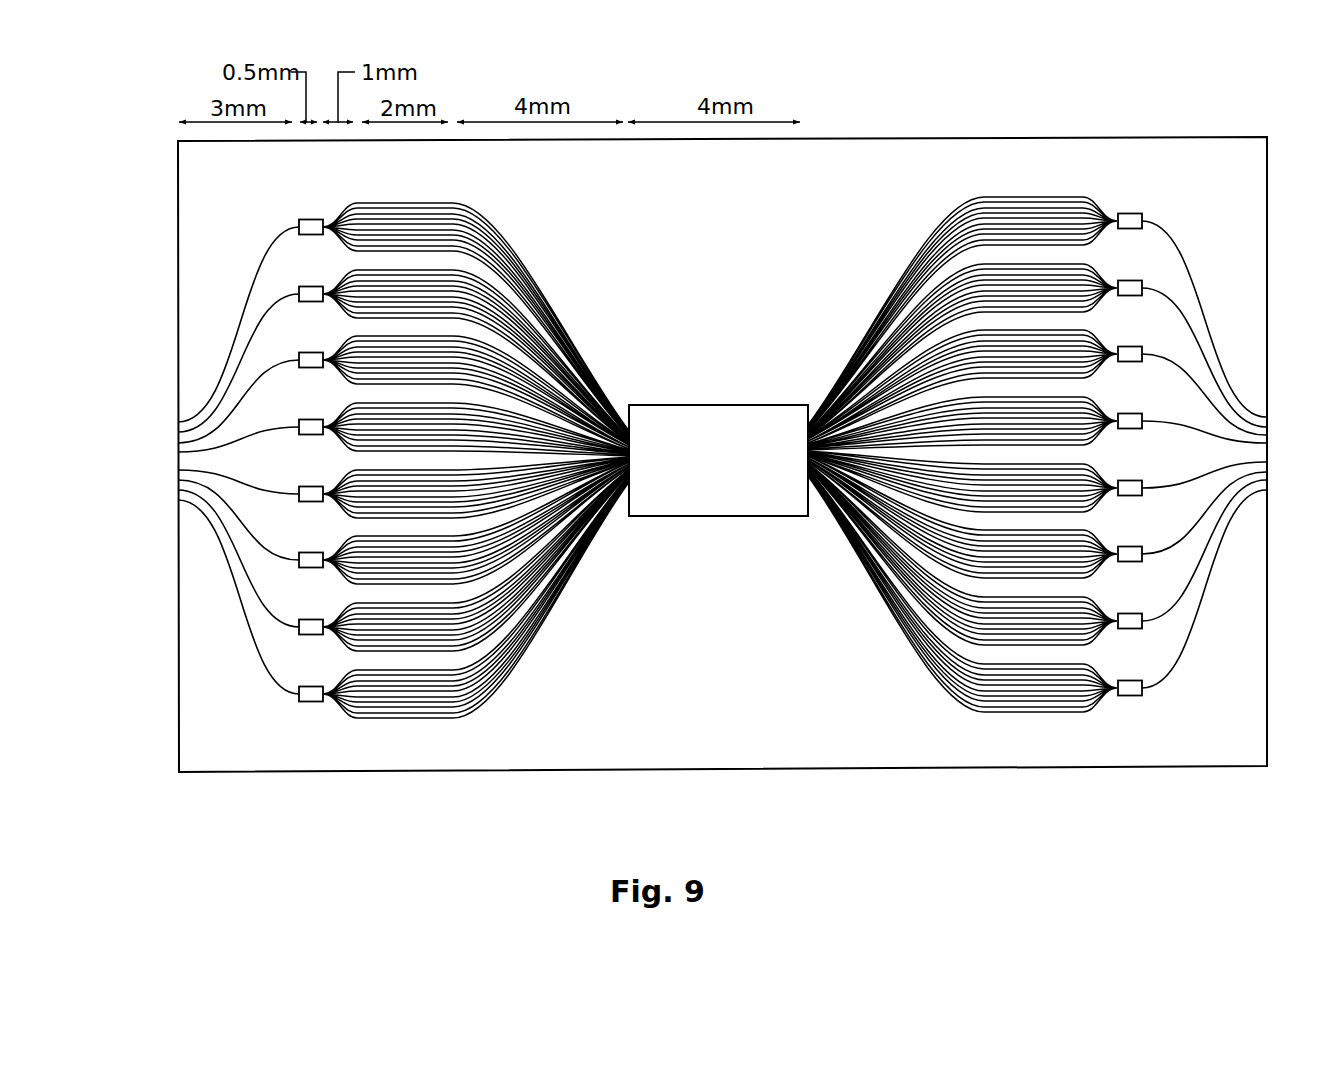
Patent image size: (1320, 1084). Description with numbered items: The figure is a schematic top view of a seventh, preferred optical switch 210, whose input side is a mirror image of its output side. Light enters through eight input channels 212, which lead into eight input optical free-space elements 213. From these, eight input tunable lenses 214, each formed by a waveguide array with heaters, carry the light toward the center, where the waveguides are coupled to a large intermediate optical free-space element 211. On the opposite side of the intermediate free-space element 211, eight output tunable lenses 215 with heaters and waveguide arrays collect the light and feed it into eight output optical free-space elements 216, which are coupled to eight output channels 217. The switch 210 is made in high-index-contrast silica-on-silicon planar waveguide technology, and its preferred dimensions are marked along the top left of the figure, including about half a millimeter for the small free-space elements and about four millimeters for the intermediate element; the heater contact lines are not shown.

The switch 210 is at (1245, 739).
The intermediate optical free-space element 211 is at (713, 473).
The input channels 212 is at (300, 787).
The input optical free-space elements 213 is at (314, 703).
The input tunable lenses 214 is at (632, 787).
The output tunable lenses 215 is at (1117, 787).
The output optical free-space elements 216 is at (1130, 696).
The output channels 217 is at (1268, 787).